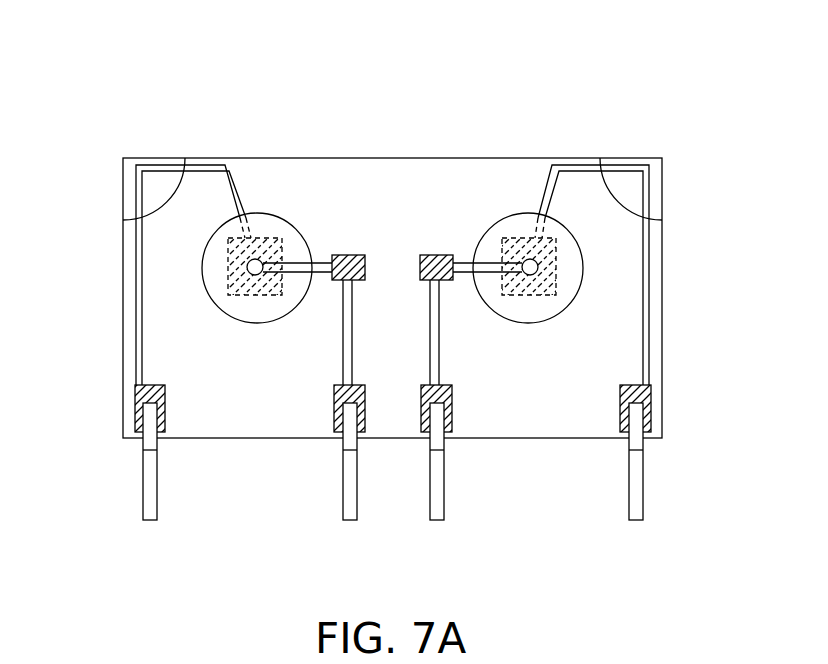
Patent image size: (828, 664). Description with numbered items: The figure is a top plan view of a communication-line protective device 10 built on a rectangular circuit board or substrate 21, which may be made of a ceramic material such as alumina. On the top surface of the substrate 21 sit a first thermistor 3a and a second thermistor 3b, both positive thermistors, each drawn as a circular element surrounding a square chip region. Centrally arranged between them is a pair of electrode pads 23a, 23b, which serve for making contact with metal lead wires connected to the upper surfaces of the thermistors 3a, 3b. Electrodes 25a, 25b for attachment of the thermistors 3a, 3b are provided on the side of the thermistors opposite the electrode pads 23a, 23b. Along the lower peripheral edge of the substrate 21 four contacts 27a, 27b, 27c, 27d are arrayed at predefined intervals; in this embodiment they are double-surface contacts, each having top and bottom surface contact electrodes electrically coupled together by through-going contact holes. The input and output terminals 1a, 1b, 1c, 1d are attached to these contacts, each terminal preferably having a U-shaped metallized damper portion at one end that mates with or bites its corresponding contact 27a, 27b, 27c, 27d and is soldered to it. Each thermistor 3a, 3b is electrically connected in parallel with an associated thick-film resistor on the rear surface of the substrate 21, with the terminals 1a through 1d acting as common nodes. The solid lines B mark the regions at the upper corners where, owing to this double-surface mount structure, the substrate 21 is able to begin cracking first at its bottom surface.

The protective device 10 is at (80, 45).
The substrate 21 is at (383, 178).
The solid lines B is at (162, 200).
The first thermistor 3a is at (213, 262).
The second thermistor 3b is at (572, 278).
The electrode 25a is at (270, 247).
The electrode 25b is at (505, 238).
The electrode pad 23a is at (357, 253).
The electrode pad 23b is at (430, 253).
The double-surface contact 27a is at (142, 433).
The double-surface contact 27b is at (340, 432).
The double-surface contact 27c is at (447, 432).
The double-surface contact 27d is at (648, 400).
The input/output terminal 1a is at (350, 497).
The input/output terminal 1b is at (435, 498).
The input/output terminal 1c is at (150, 498).
The input/output terminal 1d is at (637, 503).